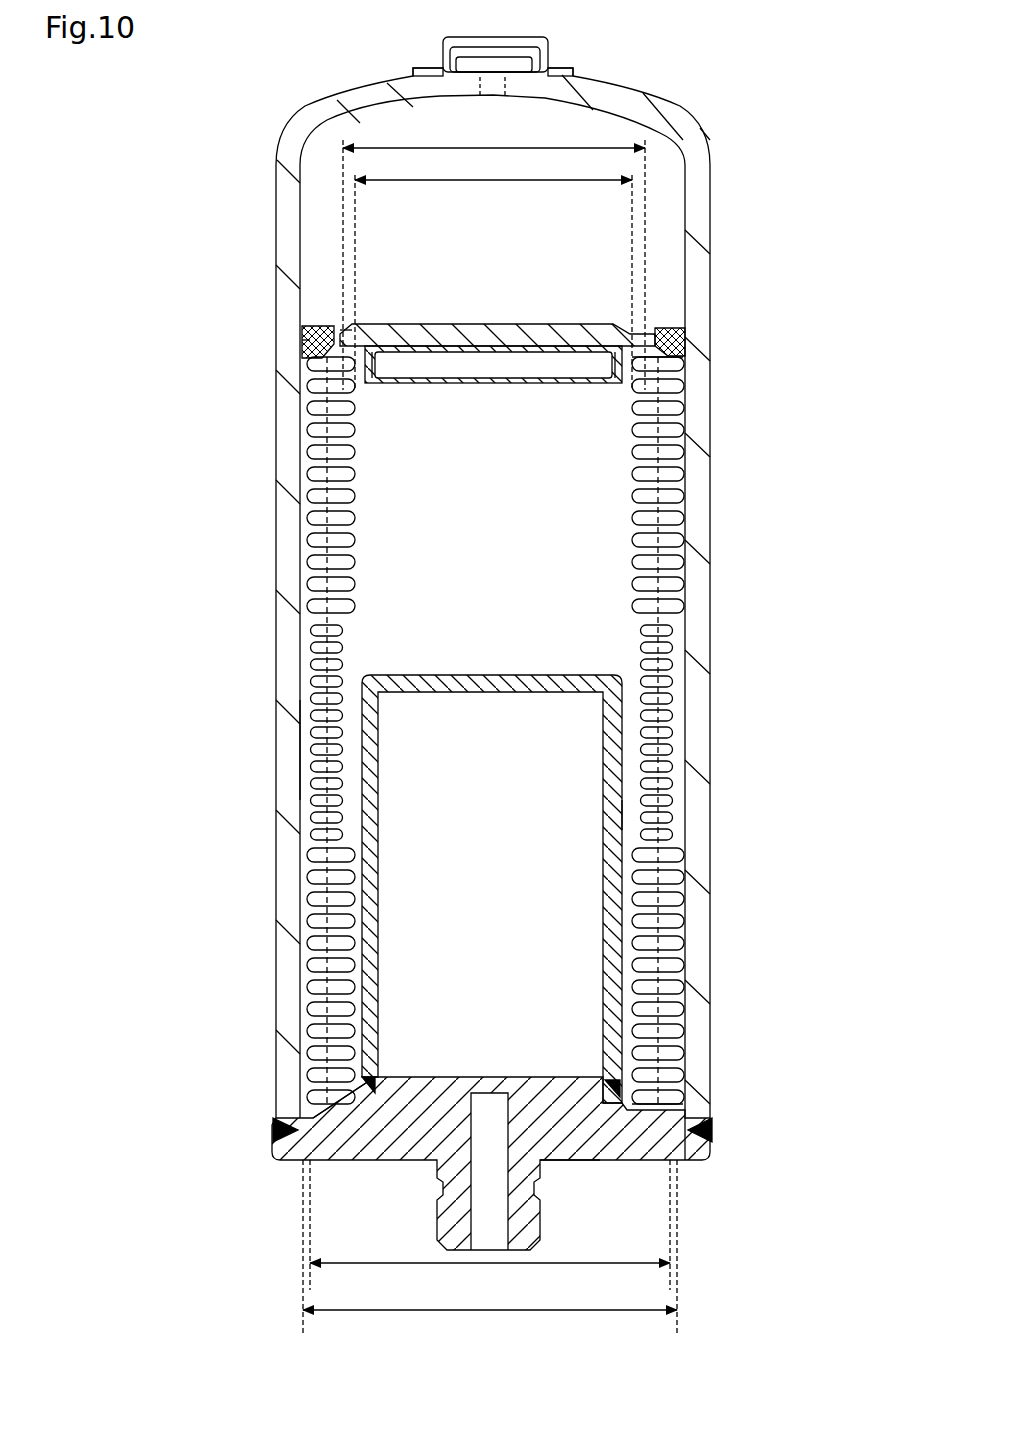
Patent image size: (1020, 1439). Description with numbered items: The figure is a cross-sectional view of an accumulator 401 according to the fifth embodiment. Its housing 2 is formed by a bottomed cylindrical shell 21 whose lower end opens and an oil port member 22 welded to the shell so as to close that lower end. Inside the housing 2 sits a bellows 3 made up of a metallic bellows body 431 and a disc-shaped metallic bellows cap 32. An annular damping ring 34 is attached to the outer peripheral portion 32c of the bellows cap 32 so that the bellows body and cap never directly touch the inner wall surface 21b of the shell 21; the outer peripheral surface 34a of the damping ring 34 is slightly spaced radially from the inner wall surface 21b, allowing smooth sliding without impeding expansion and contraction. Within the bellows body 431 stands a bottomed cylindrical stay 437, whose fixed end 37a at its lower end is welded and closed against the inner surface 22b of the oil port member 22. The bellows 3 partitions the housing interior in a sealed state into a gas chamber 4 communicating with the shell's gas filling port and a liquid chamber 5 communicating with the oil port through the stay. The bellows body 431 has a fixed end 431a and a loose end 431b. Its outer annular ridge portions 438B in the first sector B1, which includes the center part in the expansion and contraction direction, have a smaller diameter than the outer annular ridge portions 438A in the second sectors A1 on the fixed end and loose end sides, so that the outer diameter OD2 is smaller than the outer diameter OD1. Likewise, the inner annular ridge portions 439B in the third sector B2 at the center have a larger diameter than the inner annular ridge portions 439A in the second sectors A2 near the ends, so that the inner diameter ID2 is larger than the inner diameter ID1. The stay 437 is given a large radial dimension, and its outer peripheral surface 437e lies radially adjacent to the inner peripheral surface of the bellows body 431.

The accumulator 401 is at (297, 86).
The housing 2 is at (740, 307).
The shell 21 is at (690, 97).
The inner wall surface 21b is at (292, 755).
The oil port member 22 is at (516, 1140).
The inner surface 22b is at (600, 1160).
The bellows 3 is at (447, 299).
The bellows cap 32 is at (488, 318).
The outer peripheral portion 32c is at (340, 322).
The damping ring 34 is at (313, 322).
The outer peripheral surface 34a is at (303, 340).
The fixed end 37a is at (395, 1085).
The gas chamber 4 is at (322, 192).
The liquid chamber 5 is at (418, 485).
The bellows body 431 is at (649, 731).
The fixed end 431a is at (690, 1096).
The loose end 431b is at (690, 385).
The stay 437 is at (432, 675).
The outer peripheral surface 437e is at (650, 813).
The outer annular ridge portions 438A is at (313, 622).
The outer annular ridge portions 438B is at (310, 673).
The inner annular ridge portions 439A is at (630, 613).
The inner annular ridge portions 439B is at (650, 760).
The second sectors A1 is at (300, 425).
The second sectors A2 is at (636, 470).
The first sector B1 is at (276, 716).
The third sector B2 is at (630, 641).
The inner diameter ID1 is at (493, 282).
The inner diameter ID2 is at (494, 265).
The outer diameter OD1 is at (490, 1247).
The outer diameter OD2 is at (490, 1225).